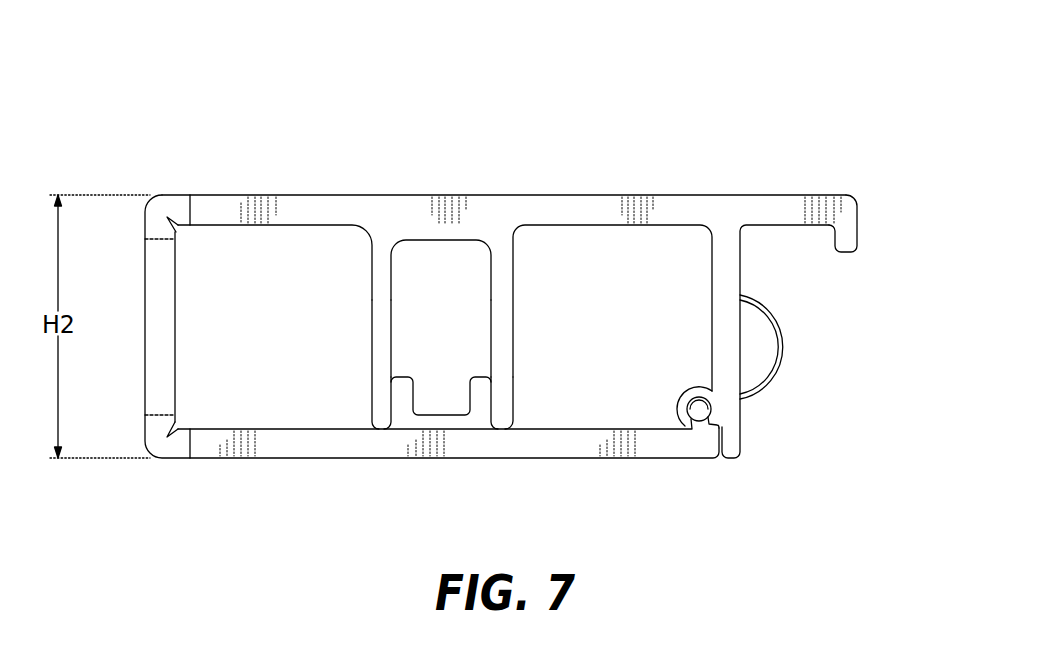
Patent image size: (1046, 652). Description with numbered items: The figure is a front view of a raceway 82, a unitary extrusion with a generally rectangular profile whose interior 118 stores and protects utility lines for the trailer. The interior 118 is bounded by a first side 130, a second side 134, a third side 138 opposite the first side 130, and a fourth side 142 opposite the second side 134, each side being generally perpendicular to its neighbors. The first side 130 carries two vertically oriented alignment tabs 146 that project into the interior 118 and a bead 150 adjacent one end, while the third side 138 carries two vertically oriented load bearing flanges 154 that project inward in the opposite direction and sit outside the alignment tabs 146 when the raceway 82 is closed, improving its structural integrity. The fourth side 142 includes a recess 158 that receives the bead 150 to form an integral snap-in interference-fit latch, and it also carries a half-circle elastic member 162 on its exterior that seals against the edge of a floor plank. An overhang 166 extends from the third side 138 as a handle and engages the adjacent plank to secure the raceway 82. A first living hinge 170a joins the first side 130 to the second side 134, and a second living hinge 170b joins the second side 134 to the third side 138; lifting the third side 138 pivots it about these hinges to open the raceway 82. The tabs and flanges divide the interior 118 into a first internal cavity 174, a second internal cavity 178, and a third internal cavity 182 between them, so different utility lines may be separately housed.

The raceway 82 is at (662, 88).
The interior 118 is at (190, 345).
The first side 130 is at (310, 510).
The second side 134 is at (127, 292).
The third side 138 is at (433, 153).
The fourth side 142 is at (880, 370).
The alignment tabs 146 is at (472, 393).
The bead 150 is at (680, 419).
The load bearing flanges 154 is at (492, 323).
The recess 158 is at (697, 404).
The elastic member 162 is at (766, 308).
The overhang 166 is at (810, 193).
The first living hinge 170a is at (157, 458).
The second living hinge 170b is at (165, 202).
The first internal cavity 174 is at (300, 245).
The second internal cavity 178 is at (675, 245).
The third internal cavity 182 is at (468, 258).